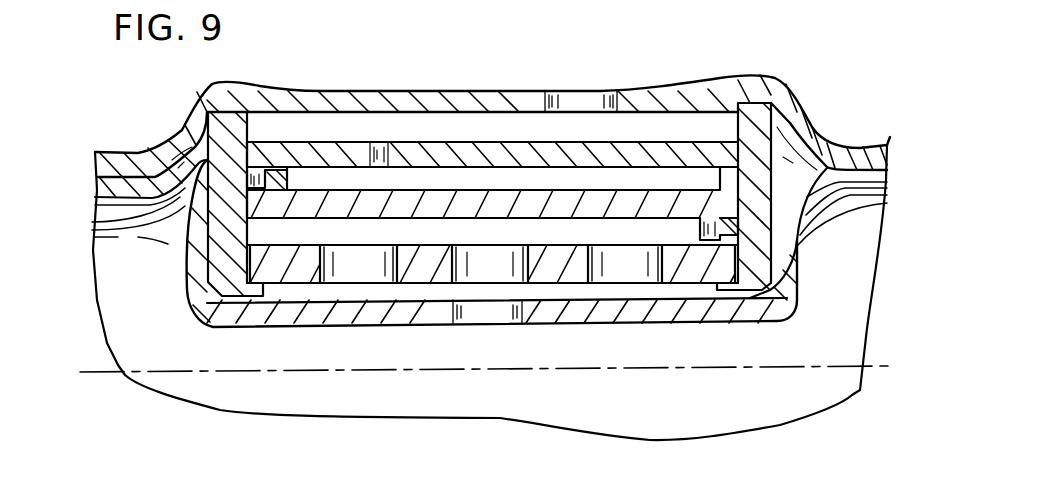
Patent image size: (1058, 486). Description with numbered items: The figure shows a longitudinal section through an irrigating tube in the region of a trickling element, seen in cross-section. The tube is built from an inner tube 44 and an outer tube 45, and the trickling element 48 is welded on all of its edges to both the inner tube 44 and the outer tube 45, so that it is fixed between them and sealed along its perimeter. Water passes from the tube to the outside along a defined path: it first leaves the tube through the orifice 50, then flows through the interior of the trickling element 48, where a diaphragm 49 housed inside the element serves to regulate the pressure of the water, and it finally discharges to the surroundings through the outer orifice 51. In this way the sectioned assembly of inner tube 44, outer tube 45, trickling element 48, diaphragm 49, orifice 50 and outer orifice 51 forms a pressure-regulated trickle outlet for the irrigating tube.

The inner tube 44 is at (327, 313).
The outer tube 45 is at (367, 97).
The trickling element 48 is at (754, 117).
The diaphragm 49 is at (453, 205).
The orifice 50 is at (477, 312).
The outer orifice 51 is at (565, 97).